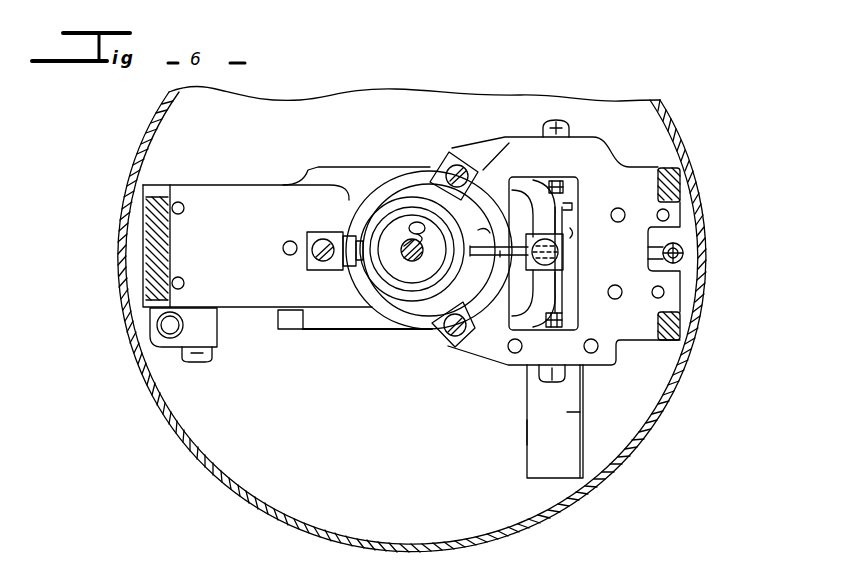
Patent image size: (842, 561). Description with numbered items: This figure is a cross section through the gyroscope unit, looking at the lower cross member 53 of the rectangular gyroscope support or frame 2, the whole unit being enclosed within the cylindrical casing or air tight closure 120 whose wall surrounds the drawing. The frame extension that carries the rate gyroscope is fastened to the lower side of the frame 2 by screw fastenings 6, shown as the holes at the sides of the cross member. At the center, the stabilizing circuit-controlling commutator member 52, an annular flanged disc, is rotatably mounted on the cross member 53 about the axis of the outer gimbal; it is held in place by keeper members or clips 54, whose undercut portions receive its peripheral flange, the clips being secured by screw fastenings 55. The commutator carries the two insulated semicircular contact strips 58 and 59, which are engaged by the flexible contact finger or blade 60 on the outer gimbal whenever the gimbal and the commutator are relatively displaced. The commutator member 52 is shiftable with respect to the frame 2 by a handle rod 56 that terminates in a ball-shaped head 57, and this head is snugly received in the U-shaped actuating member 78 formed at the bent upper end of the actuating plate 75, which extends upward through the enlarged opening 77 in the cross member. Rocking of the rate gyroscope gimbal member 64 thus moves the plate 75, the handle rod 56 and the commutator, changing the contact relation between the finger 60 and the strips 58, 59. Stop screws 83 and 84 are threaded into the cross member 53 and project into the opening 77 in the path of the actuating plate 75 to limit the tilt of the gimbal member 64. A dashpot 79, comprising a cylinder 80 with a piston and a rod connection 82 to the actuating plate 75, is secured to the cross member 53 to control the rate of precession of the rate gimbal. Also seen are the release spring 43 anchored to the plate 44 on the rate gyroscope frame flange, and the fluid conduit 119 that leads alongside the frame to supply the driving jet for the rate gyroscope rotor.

The gyroscope support or frame 2 is at (125, 247).
The screw fastenings 6 is at (185, 209).
The release spring 43 is at (685, 248).
The plate 44 is at (685, 257).
The commutator member 52 is at (370, 200).
The lower cross member 53 is at (247, 173).
The keeper members or clips 54 is at (442, 174).
The screw fastenings 55 is at (448, 160).
The handle rod 56 is at (495, 262).
The ball-shaped head 57 is at (478, 230).
The semicircular contact strip 58 is at (425, 191).
The semicircular contact strip 59 is at (425, 311).
The flexible contact finger or blade 60 is at (349, 270).
The gimbal member 64 is at (323, 328).
The actuating plate 75 is at (568, 222).
The enlarged opening 77 is at (578, 243).
The U-shaped actuating member 78 is at (542, 253).
The dashpot 79 is at (585, 418).
The cylinder 80 is at (519, 435).
The rod connection 82 is at (558, 303).
The stop screw 83 is at (566, 318).
The stop screw 84 is at (565, 188).
The fluid conduit 119 is at (183, 324).
The casing or air tight closure 120 is at (648, 430).